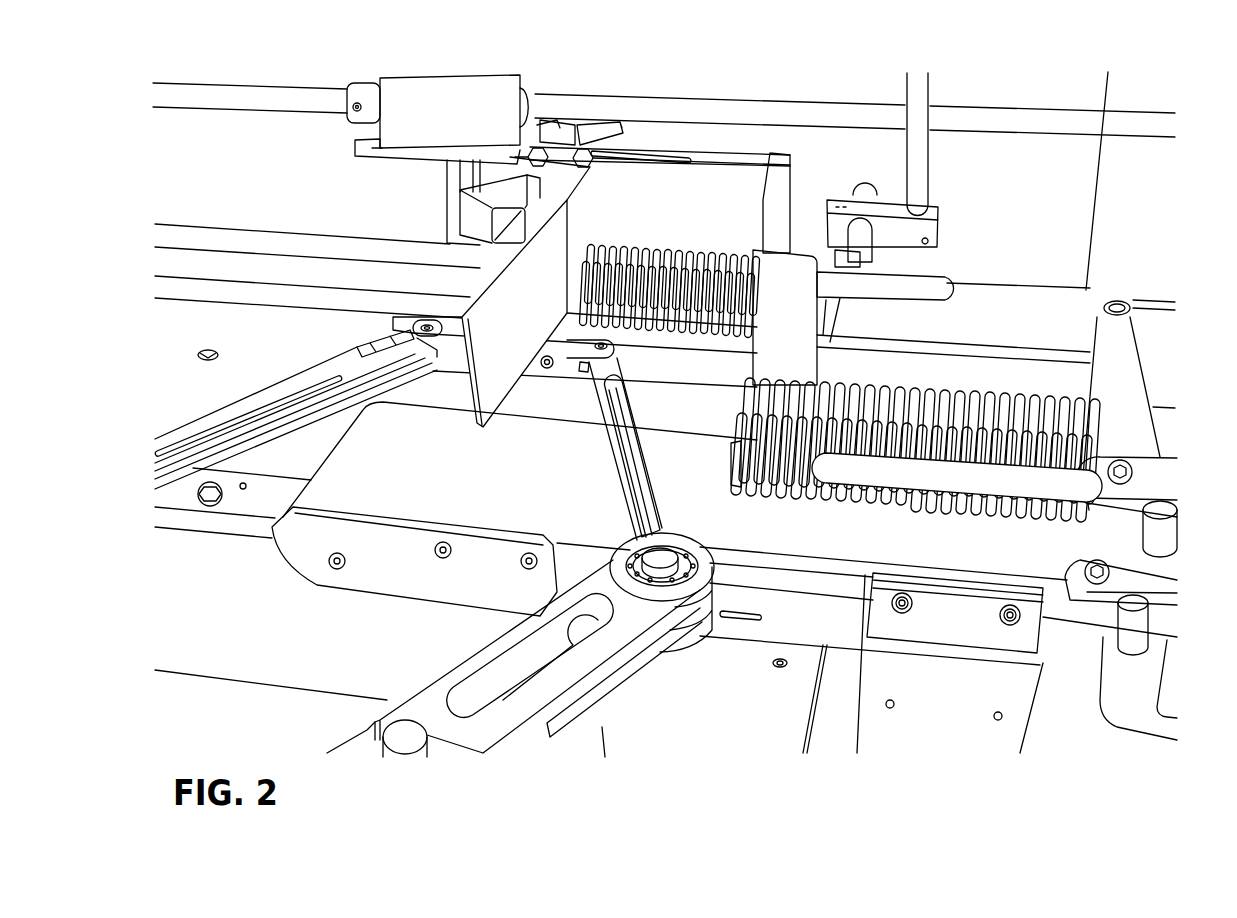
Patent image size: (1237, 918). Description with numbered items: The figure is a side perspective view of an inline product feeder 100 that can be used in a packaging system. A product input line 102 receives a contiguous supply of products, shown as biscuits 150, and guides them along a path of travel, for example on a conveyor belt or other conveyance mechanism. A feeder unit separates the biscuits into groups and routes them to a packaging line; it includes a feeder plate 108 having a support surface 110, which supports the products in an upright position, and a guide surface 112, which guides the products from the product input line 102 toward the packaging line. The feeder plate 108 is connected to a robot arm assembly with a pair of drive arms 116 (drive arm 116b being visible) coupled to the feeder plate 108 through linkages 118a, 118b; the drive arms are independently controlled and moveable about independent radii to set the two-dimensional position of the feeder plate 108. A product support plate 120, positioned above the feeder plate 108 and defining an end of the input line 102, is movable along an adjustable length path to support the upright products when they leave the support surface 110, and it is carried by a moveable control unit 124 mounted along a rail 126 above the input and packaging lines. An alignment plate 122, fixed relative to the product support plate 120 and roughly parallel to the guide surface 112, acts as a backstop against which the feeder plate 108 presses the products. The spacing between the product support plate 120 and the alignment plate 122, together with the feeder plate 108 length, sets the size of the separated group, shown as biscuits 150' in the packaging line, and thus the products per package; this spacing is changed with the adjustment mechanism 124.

The inline product feeder 100 is at (1057, 741).
The product input line 102 is at (710, 490).
The feeder plate 108 is at (661, 363).
The support surface 110 is at (750, 365).
The guide surface 112 is at (682, 338).
The drive arms 116 is at (173, 440).
The drive arm 116b is at (577, 712).
The linkage 118a is at (624, 484).
The linkage 118b is at (650, 487).
The product support plate 120 is at (497, 402).
The alignment plate 122 is at (797, 357).
The moveable control unit 124 is at (577, 128).
The rail 126 is at (668, 105).
The biscuits 150 is at (916, 460).
The biscuits 150' is at (669, 268).